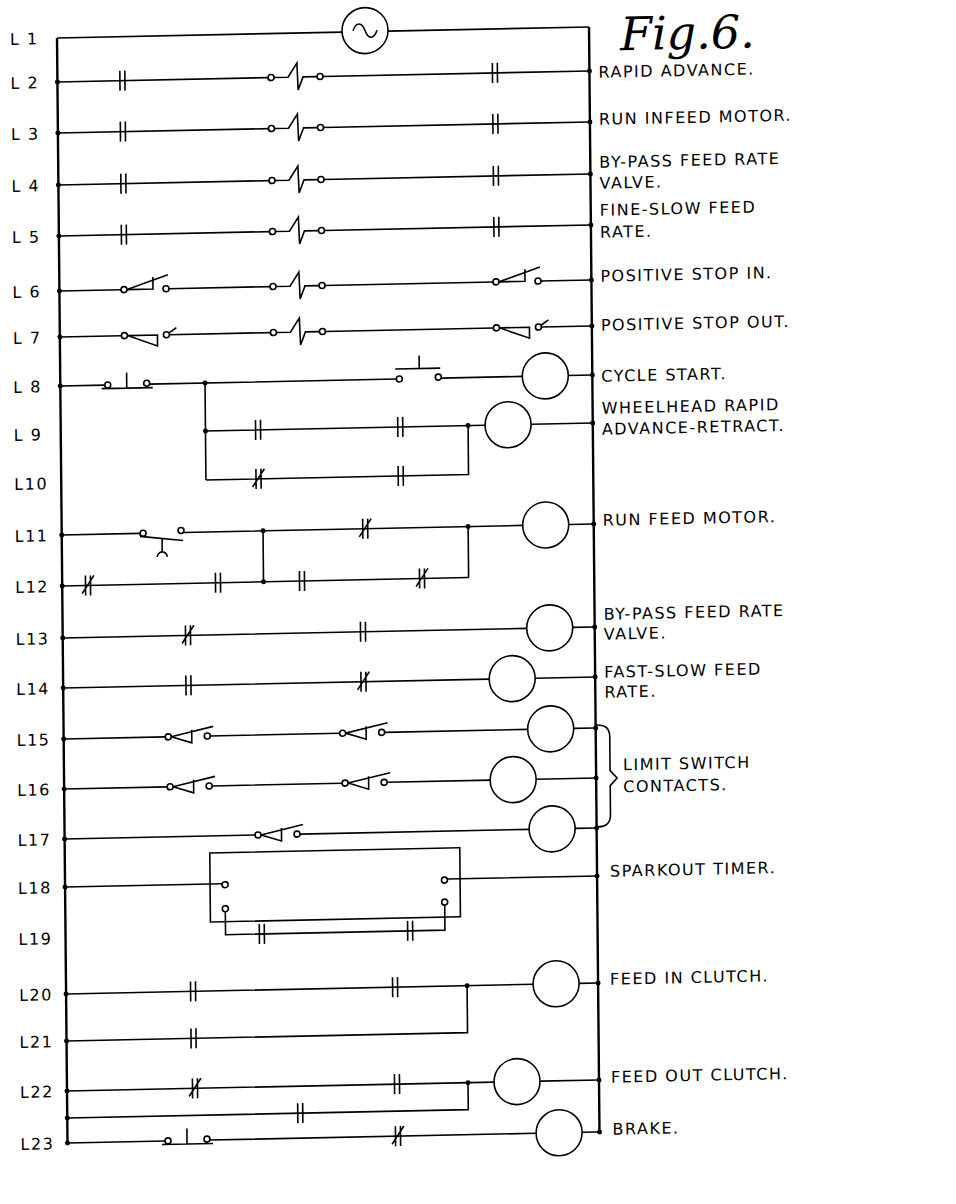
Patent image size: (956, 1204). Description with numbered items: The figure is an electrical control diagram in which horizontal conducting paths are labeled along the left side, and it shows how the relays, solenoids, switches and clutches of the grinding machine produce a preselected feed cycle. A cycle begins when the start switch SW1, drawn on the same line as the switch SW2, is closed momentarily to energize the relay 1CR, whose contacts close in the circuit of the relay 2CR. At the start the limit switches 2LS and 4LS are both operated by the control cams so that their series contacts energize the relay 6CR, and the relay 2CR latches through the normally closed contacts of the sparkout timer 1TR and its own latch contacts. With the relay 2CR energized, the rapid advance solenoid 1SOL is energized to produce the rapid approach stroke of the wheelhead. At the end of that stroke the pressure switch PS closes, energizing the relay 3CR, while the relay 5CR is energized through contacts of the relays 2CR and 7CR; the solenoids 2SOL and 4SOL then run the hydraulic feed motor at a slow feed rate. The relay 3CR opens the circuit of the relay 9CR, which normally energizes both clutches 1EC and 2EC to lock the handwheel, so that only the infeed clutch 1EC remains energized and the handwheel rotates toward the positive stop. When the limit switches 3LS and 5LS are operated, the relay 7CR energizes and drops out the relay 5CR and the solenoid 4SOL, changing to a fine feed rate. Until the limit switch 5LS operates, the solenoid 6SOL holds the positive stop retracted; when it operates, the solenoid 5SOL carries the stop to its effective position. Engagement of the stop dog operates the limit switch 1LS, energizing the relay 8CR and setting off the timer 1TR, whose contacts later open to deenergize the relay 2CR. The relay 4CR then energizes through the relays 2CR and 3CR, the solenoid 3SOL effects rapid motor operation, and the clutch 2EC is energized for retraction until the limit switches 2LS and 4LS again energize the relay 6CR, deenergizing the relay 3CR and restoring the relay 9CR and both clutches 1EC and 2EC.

The relay 1CR is at (483, 394).
The relay 2CR is at (314, 575).
The relay 3CR is at (347, 629).
The relay 4CR is at (347, 405).
The relay 5CR is at (334, 457).
The relay 6CR is at (414, 679).
The relay 7CR is at (446, 686).
The relay 8CR is at (491, 877).
The relay 9CR is at (386, 1091).
The rapid advance solenoid 1SOL is at (324, 74).
The solenoid 2SOL is at (324, 125).
The solenoid 3SOL is at (325, 177).
The solenoid 4SOL is at (325, 228).
The solenoid 5SOL is at (326, 283).
The solenoid 6SOL is at (326, 329).
The limit switch 1LS is at (298, 828).
The limit switch 2LS is at (199, 741).
The limit switch 3LS is at (202, 791).
The limit switch 4LS is at (371, 737).
The limit switch 5LS is at (337, 535).
The start switch SW1 is at (434, 366).
The switch SW2 is at (147, 376).
The pressure switch PS is at (162, 535).
The sparkout timer 1TR is at (333, 689).
The infeed clutch 1EC is at (556, 983).
The clutch 2EC is at (517, 1081).